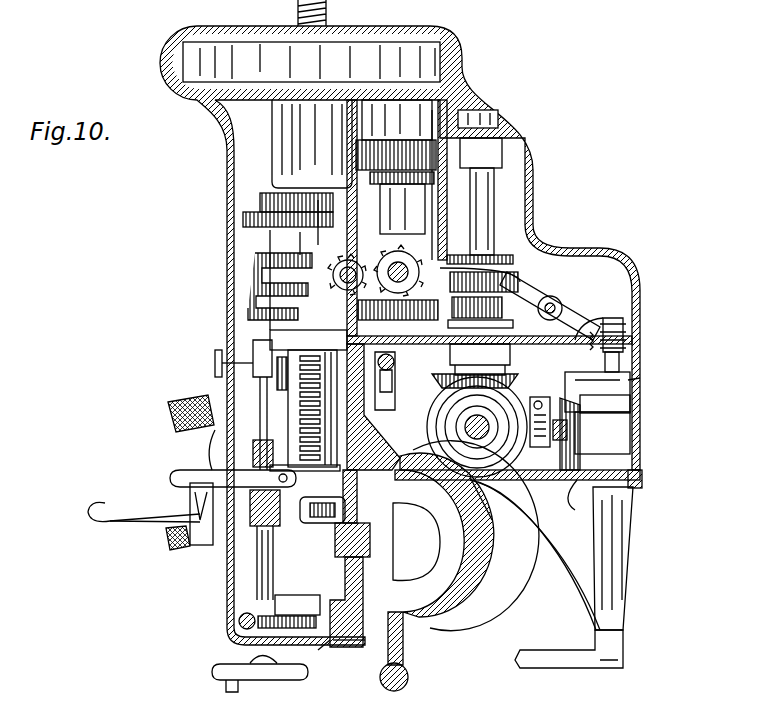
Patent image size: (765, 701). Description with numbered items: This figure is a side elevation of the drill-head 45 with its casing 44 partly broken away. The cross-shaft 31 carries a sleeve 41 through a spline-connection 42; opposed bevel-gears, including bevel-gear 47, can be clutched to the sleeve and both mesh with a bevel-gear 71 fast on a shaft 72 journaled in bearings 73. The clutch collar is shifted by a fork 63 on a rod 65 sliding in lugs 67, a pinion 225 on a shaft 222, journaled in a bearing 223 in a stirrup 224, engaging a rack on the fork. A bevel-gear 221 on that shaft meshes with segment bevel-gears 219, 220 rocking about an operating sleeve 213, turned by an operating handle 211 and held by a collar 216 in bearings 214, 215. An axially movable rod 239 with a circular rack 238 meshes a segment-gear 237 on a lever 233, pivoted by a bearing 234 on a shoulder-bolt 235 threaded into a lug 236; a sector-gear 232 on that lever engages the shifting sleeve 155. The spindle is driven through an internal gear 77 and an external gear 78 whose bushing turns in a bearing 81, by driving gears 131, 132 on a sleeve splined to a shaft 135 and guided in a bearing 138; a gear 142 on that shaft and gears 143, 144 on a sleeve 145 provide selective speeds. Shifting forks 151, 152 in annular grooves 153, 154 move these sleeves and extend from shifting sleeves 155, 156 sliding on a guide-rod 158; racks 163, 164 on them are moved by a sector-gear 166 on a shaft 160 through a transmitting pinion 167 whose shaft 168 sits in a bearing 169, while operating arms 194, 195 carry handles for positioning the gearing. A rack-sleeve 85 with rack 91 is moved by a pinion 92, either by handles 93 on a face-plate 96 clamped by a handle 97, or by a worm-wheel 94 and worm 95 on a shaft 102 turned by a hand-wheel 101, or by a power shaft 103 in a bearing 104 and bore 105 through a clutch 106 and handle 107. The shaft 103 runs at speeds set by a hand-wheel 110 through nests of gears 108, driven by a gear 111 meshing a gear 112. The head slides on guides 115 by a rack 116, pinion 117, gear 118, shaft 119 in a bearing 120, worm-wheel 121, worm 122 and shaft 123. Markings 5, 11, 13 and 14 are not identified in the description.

The shaft 13 is at (330, 14).
The internal gear 77 is at (185, 52).
The bearing 81 is at (282, 148).
The external gear 78 is at (260, 198).
The gear 111 is at (243, 222).
The drill-head 45 is at (215, 193).
The gear 112 is at (320, 232).
The rack 163 is at (300, 240).
The section line 5 is at (725, 296).
The annular groove 153 is at (400, 150).
The shifting fork 151 is at (370, 164).
The shifting sleeve 155 is at (380, 192).
The sector-gear 232 is at (445, 215).
The driving gear 131 is at (420, 78).
The bearing 138 is at (440, 100).
The guide-rod 158 is at (470, 102).
The shaft 135 is at (498, 118).
The driving gear 132 is at (470, 156).
The bearings 73 is at (500, 162).
The shaft 72 is at (487, 188).
The shifting sleeve 156 is at (460, 262).
The shifting fork 152 is at (470, 275).
The annular groove 154 is at (513, 262).
The sleeve 145 is at (535, 230).
The gear 143 is at (590, 248).
The bearing 234 is at (630, 250).
The lever 233 is at (652, 268).
The shaft 168 is at (345, 250).
The rocking member 160 is at (338, 268).
The transmitting pinion 167 is at (390, 290).
The sector-gear 166 is at (368, 300).
The bearing 169 is at (345, 330).
The nests of gears 108 is at (257, 290).
The casing 44 is at (253, 352).
The bearing 104 is at (277, 360).
The hand-wheel 110 is at (215, 368).
The operating arm 194 is at (168, 408).
The section line 11 is at (683, 473).
The shaft 103 is at (262, 430).
The rack 91 is at (300, 400).
The rack-sleeve 85 is at (305, 477).
The gear 142 is at (388, 380).
The handle 107 is at (175, 476).
The clutch 106 is at (190, 500).
The handle 97 is at (110, 506).
The handles 93 is at (125, 522).
The operating arm 195 is at (168, 538).
The worm 95 is at (250, 510).
The bore 105 is at (255, 530).
The face-plate 96 is at (258, 545).
The worm-wheel 94 is at (265, 560).
The gear 118 is at (280, 585).
The shaft 102 is at (275, 600).
The worm 122 is at (239, 624).
The shaft 123 is at (240, 634).
The hand-wheel 101 is at (300, 676).
The operating sleeve 213 is at (230, 700).
The axially movable rod 239 is at (290, 700).
The pinion 92 is at (345, 508).
The pinion 117 is at (370, 530).
The rack 116 is at (398, 548).
The guides 115 is at (390, 585).
The shaft 119 is at (410, 596).
The housing 14 is at (478, 585).
The bearing 120 is at (355, 645).
The worm-wheel 121 is at (316, 656).
The spline-connection 42 is at (487, 435).
The sleeve 41 is at (482, 440).
The bevel-gear 47 is at (492, 506).
The cross-shaft 31 is at (475, 440).
The rack 164 is at (503, 356).
The fork 63 is at (518, 382).
The bevel-gear 71 is at (575, 400).
The rod 65 is at (545, 398).
The pinion 225 is at (560, 440).
The stirrup 224 is at (560, 355).
The gear 144 is at (500, 300).
The pivot shoulder-bolt 235 is at (562, 284).
The lug 236 is at (560, 300).
The segment-gear 237 is at (596, 310).
The circular rack 238 is at (623, 340).
The lugs 67 is at (640, 380).
The collar 216 is at (620, 386).
The bearing 215 is at (628, 400).
The segment bevel-gear 220 is at (625, 408).
The segment bevel-gear 219 is at (640, 470).
The bearing 214 is at (648, 625).
The operating handle 211 is at (560, 670).
The bevel-gear 221 is at (570, 480).
The shaft 222 is at (533, 555).
The bearing 223 is at (539, 556).